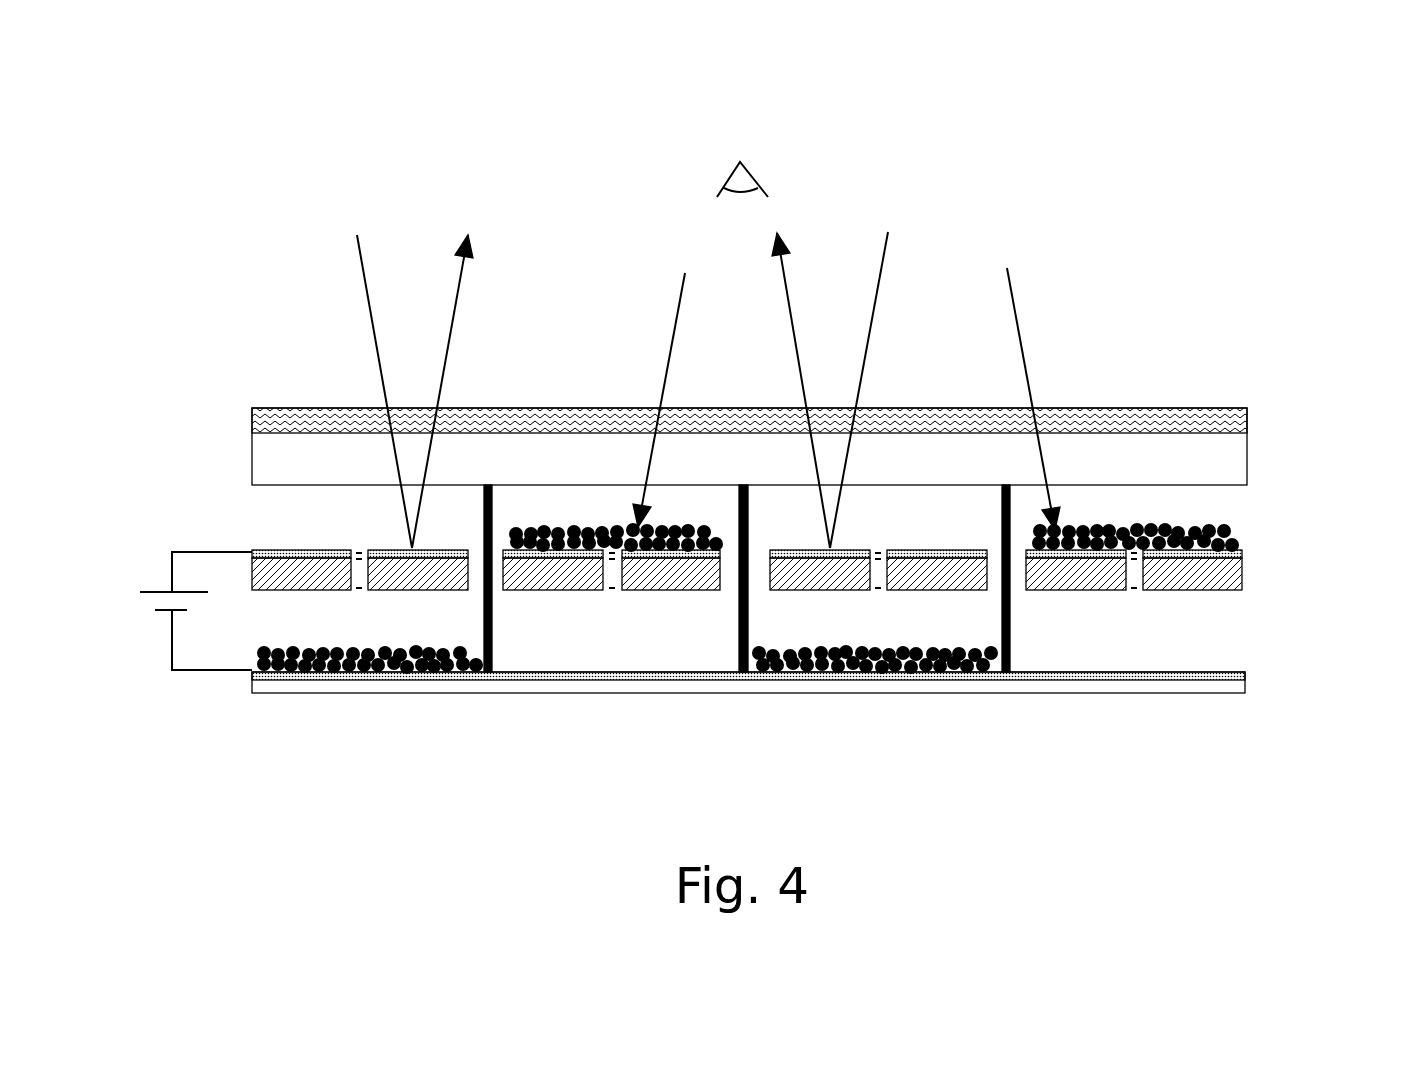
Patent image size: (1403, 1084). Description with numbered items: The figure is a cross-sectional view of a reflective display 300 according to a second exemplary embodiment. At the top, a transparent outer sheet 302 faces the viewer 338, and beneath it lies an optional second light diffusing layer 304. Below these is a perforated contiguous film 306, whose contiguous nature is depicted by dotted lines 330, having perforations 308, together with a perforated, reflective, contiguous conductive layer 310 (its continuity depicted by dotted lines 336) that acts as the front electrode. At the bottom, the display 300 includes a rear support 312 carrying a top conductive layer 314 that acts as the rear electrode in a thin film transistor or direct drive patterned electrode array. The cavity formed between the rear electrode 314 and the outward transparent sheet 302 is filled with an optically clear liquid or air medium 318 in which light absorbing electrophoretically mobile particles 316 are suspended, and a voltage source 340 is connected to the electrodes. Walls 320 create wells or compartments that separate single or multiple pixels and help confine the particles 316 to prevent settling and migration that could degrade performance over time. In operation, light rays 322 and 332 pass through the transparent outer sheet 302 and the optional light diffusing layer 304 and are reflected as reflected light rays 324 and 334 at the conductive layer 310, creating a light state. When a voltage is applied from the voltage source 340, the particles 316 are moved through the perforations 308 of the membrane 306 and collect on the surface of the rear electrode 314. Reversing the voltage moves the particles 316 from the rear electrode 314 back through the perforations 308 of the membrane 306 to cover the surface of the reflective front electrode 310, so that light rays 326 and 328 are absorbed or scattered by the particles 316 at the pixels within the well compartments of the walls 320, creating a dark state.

The display 300 is at (1160, 392).
The transparent outer sheet 302 is at (250, 460).
The light diffusing layer 304 is at (555, 415).
The perforated contiguous film 306 is at (1245, 575).
The perforations 308 is at (1020, 575).
The conductive layer 310 is at (298, 550).
The rear support 312 is at (940, 693).
The top conductive layer 314 is at (1205, 670).
The light absorbing electrophoretically mobile particles 316 is at (422, 642).
The optically clear liquid or air medium 318 is at (750, 571).
The walls 320 is at (493, 630).
The light ray 322 is at (360, 277).
The reflected light ray 324 is at (455, 300).
The light ray 326 is at (674, 380).
The light ray 328 is at (1016, 377).
The dotted lines 330 is at (880, 590).
The light ray 332 is at (880, 305).
The reflected light ray 334 is at (786, 300).
The dotted lines 336 is at (880, 550).
The viewer 338 is at (760, 183).
The voltage source 340 is at (172, 634).